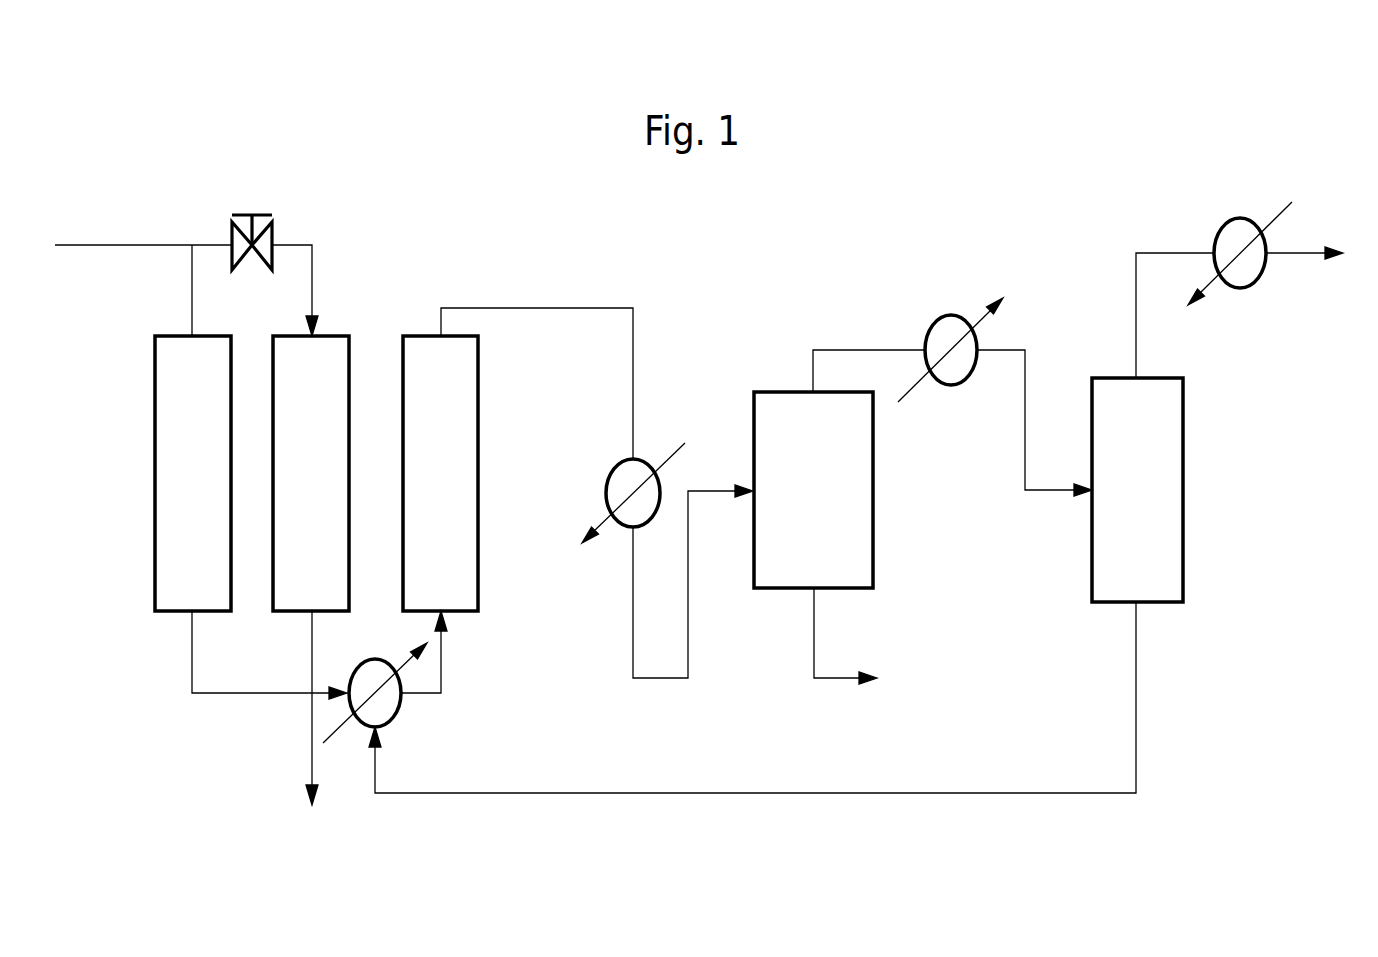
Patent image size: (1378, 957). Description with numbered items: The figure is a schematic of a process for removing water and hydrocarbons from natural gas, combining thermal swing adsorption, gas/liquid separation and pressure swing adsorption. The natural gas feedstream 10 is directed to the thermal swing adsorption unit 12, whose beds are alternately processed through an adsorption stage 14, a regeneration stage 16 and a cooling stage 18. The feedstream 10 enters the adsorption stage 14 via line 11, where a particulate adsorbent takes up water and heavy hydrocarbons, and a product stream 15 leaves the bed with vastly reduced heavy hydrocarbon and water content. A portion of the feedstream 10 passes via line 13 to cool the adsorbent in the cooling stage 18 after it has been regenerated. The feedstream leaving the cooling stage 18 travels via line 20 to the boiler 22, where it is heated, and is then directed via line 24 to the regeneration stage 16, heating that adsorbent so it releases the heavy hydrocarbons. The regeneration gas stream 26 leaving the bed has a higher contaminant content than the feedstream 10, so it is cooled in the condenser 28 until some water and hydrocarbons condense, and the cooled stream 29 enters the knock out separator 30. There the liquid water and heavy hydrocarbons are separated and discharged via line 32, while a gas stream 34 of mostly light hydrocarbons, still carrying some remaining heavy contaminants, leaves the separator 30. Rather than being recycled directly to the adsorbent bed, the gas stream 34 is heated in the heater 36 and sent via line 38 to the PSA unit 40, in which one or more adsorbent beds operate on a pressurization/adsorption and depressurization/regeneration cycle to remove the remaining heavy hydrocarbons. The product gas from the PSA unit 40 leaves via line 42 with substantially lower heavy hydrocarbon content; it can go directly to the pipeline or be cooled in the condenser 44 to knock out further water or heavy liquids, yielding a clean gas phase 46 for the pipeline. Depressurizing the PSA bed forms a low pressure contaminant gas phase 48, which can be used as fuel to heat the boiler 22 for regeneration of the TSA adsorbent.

The natural gas feedstream 10 is at (118, 245).
The line 11 is at (312, 268).
The thermal swing adsorption unit 12 is at (374, 318).
The line 13 is at (192, 290).
The adsorption stage 14 is at (349, 407).
The product stream 15 is at (312, 757).
The regeneration stage 16 is at (478, 407).
The cooling stage 18 is at (154, 407).
The line 20 is at (227, 695).
The boiler 22 is at (400, 710).
The line 24 is at (441, 660).
The gas stream 26 is at (535, 308).
The condenser 28 is at (606, 480).
The cooled stream 29 is at (688, 645).
The knock out separator 30 is at (777, 392).
The line 32 is at (842, 682).
The gas stream 34 is at (843, 350).
The heater 36 is at (927, 326).
The line 38 is at (1025, 370).
The PSA unit 40 is at (1183, 449).
The line 42 is at (1136, 298).
The condenser 44 is at (1217, 231).
The clean gas phase 46 is at (1307, 257).
The low pressure contaminant gas phase 48 is at (1136, 700).